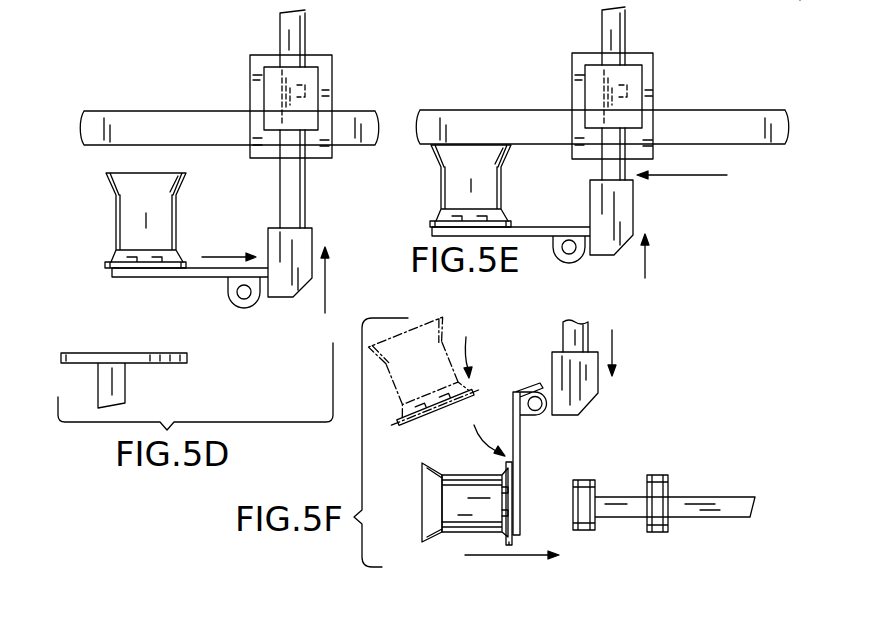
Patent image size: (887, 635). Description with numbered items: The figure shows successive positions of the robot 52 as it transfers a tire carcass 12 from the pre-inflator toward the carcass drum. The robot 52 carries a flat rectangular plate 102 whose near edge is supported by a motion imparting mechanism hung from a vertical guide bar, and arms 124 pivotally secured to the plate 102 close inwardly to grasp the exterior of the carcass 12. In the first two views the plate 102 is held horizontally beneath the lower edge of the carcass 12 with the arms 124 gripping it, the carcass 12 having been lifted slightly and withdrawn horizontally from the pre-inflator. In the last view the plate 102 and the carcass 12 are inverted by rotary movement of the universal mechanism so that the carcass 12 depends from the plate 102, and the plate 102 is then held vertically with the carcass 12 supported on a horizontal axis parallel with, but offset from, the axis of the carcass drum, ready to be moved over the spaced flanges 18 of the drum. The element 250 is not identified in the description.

In FIG. 5D, the robot 52 is at (168, 111).
In FIG. 5D, the flat rectangular plate 102 is at (147, 280).
In FIG. 5E, the flat rectangular plate 102 is at (432, 235).
In FIG. 5F, the flat rectangular plate 102 is at (521, 448).
In FIG. 5D, the arms 124 is at (108, 265).
In FIG. 5E, the arms 124 is at (428, 222).
In FIG. 5F, the arms 124 is at (513, 548).
In FIG. 5F, the spool flange 250 is at (422, 495).
In FIG. 5F, the carcass 12 is at (437, 515).
In FIG. 5F, the flanges 18 is at (586, 478).